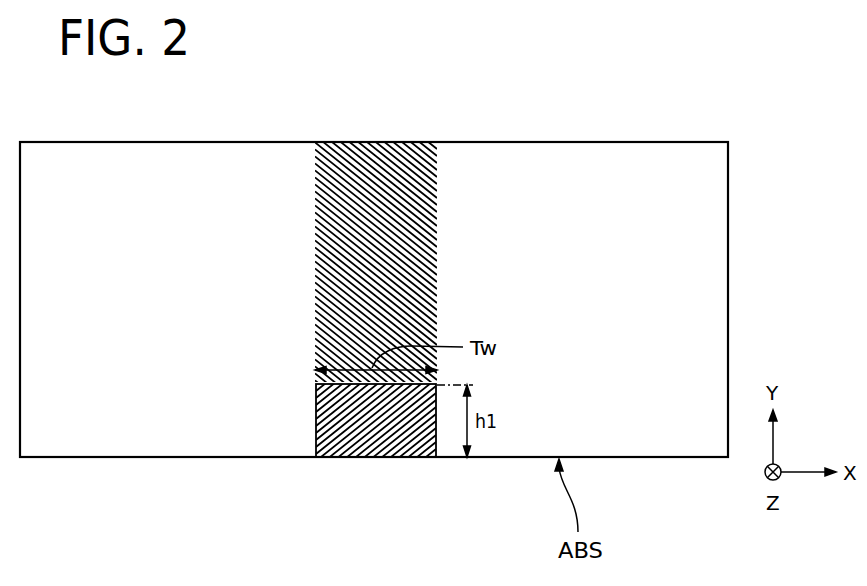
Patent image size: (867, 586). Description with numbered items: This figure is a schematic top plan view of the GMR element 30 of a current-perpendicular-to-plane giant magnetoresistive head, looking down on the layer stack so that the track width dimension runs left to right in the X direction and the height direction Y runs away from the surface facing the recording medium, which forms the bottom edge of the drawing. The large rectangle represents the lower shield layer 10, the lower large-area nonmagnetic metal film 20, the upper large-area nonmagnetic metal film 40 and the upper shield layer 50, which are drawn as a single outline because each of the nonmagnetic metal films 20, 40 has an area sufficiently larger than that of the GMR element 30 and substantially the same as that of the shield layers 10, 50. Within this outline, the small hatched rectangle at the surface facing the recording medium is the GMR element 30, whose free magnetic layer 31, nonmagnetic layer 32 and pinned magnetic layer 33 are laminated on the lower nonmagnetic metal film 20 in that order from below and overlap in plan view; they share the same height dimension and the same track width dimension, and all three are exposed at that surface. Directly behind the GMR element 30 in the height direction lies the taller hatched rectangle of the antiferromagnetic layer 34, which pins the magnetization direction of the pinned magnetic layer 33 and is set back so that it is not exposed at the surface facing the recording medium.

The lower shield layer 10 is at (374, 264).
The lower large-area nonmagnetic metal film 20 is at (374, 264).
The GMR element 30 is at (404, 422).
The free magnetic layer 31 is at (404, 422).
The nonmagnetic layer 32 is at (404, 422).
The pinned magnetic layer 33 is at (374, 437).
The antiferromagnetic layer 34 is at (390, 172).
The upper large-area nonmagnetic metal film 40 is at (374, 264).
The upper shield layer 50 is at (562, 180).